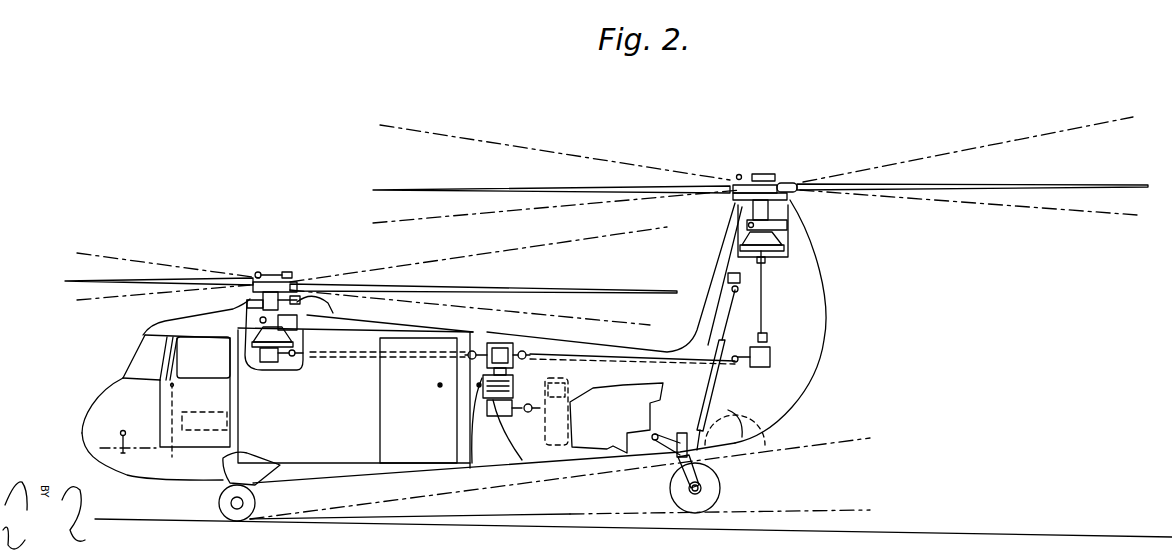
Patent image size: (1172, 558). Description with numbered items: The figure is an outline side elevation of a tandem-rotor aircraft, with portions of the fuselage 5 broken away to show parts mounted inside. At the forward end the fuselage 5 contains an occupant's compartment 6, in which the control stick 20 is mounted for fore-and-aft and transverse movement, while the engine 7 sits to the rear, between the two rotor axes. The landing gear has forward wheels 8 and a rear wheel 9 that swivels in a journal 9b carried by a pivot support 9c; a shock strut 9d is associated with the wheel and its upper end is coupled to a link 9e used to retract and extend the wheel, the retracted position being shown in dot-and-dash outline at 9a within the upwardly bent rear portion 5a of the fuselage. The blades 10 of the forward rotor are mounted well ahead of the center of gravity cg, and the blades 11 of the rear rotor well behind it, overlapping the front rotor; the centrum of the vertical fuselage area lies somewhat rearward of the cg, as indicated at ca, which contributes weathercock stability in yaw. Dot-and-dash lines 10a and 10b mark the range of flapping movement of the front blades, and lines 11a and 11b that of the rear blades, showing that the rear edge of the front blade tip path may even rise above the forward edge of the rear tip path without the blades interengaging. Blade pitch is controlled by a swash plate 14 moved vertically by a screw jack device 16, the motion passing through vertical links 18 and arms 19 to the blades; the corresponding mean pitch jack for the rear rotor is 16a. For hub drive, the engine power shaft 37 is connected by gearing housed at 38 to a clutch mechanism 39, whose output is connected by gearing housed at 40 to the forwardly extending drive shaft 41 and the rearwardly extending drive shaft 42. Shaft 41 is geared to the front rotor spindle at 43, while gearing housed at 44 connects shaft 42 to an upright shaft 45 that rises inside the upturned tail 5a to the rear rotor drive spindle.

The fuselage 5 is at (302, 480).
The upwardly extended rear portion of the fuselage 5a is at (803, 248).
The occupant's compartment 6 is at (176, 391).
The engine 7 is at (623, 395).
The forward wheels 8 is at (250, 503).
The rear wheel 9 is at (718, 487).
The retracted wheel outline 9a is at (766, 421).
The journal 9b is at (667, 457).
The pivot support 9c is at (663, 447).
The shock strut 9d is at (713, 380).
The link 9e is at (728, 306).
The blades of the forward rotor 10 is at (80, 279).
The lower flapping limit line of front rotor 10a is at (690, 329).
The upper flapping limit line of front rotor 10b is at (379, 251).
The blades of the rear rotor 11 is at (633, 188).
The lower flapping limit line of rear rotor 11a is at (749, 213).
The upper flapping limit line of rear rotor 11b is at (751, 144).
The swash plate 14 is at (262, 306).
The screw jack device 16 is at (300, 325).
The mean pitch control jack for the rear rotor 16a is at (783, 230).
The vertical links 18 is at (248, 288).
The arms 19 is at (275, 274).
The control stick 20 is at (174, 396).
The power shaft 37 is at (536, 417).
The gearing housing 38 is at (505, 400).
The clutch mechanism 39 is at (513, 380).
The gearing housing 40 is at (500, 342).
The forwardly extending rotor drive shaft 41 is at (322, 356).
The rearwardly extending drive shaft 42 is at (563, 356).
The front rotor spindle gearing 43 is at (272, 366).
The gearing housing 44 is at (770, 367).
The upright shaft 45 is at (767, 303).
The center of gravity cg is at (426, 386).
The centrum of vertical fuselage area ca is at (478, 386).